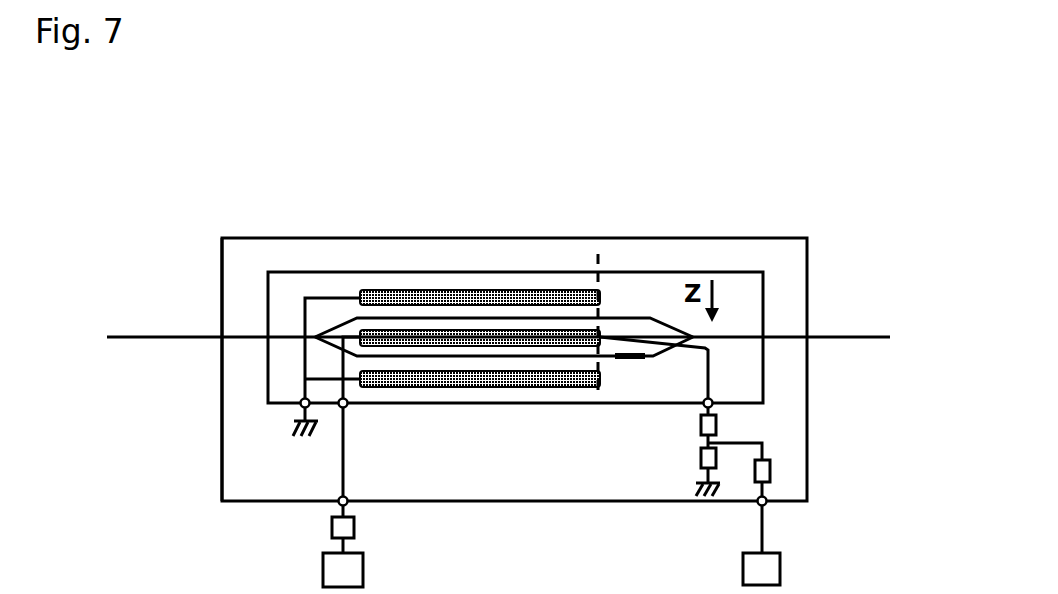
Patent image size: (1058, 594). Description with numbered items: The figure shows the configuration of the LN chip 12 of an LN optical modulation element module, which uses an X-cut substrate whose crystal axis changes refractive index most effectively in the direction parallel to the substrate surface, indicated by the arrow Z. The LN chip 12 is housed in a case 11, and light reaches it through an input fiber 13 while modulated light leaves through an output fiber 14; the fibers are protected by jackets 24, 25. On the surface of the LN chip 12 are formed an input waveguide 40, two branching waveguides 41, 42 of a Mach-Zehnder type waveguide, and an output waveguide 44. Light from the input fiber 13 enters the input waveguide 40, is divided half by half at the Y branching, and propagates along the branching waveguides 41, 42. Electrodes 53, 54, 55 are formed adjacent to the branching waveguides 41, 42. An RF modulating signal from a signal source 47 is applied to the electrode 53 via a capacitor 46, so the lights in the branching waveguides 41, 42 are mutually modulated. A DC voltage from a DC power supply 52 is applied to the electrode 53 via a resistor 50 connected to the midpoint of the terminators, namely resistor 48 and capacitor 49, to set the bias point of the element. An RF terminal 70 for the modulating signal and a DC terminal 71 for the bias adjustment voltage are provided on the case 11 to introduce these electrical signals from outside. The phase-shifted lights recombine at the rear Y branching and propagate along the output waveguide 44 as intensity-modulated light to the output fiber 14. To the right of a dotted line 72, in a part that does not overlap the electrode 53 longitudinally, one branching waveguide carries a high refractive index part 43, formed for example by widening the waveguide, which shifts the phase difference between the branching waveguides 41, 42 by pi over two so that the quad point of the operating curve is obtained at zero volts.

The case 11 is at (573, 503).
The LN chip 12 is at (310, 285).
The input fiber 13 is at (242, 340).
The output fiber 14 is at (783, 337).
The jacket 24 is at (850, 337).
The jacket 25 is at (177, 340).
The input waveguide 40 is at (288, 340).
The branching waveguide 41 is at (441, 327).
The branching waveguide 42 is at (438, 358).
The high refractive index part 43 is at (632, 358).
The output waveguide 44 is at (687, 342).
The capacitor 46 is at (331, 527).
The signal source 47 is at (345, 572).
The resistor 48 is at (717, 425).
The capacitor 49 is at (702, 458).
The resistor 50 is at (770, 470).
The DC power supply 52 is at (760, 570).
The electrode 53 is at (487, 322).
The electrode 54 is at (402, 292).
The electrode 55 is at (480, 390).
The RF terminal 70 is at (346, 505).
The DC terminal 71 is at (760, 503).
The dotted line 72 is at (600, 280).